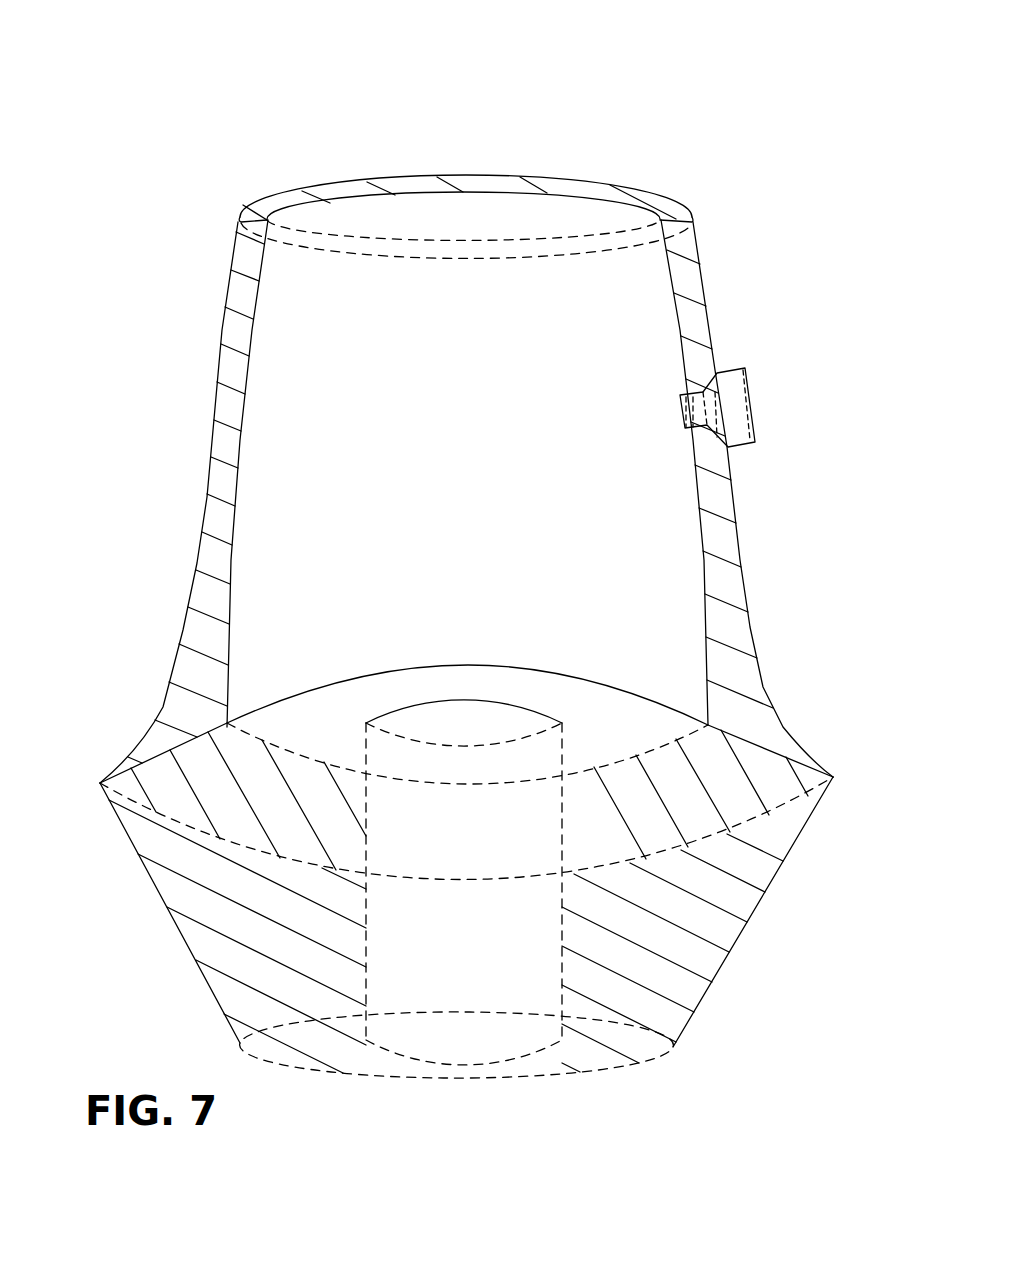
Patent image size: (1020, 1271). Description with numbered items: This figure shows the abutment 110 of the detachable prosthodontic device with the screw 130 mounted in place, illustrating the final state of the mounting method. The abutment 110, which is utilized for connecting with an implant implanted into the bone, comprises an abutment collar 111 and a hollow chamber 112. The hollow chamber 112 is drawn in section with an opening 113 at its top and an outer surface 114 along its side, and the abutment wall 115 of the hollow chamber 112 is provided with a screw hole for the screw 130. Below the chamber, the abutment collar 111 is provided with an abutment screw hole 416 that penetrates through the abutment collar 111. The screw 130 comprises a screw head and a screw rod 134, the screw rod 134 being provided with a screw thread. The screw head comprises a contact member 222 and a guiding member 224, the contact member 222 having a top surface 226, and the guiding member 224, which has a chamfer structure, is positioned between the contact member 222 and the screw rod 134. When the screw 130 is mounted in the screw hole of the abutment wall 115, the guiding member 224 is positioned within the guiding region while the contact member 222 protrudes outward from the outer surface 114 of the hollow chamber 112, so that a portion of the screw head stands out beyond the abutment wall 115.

The abutment 110 is at (403, 177).
The abutment collar 111 is at (248, 955).
The hollow chamber 112 is at (443, 476).
The opening 113 is at (510, 218).
The outer surface 114 is at (212, 400).
The abutment wall 115 is at (722, 572).
The screw 130 is at (747, 447).
The screw rod 134 is at (686, 412).
The contact member 222 is at (722, 370).
The guiding member 224 is at (708, 424).
The top surface 226 is at (752, 404).
The abutment screw hole 416 is at (455, 728).